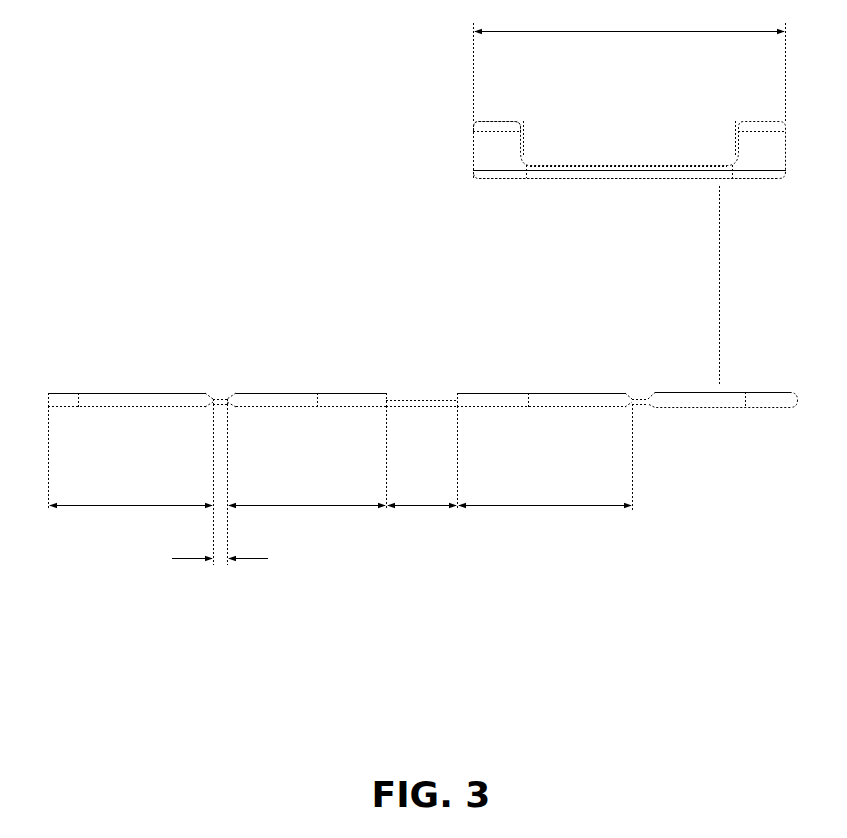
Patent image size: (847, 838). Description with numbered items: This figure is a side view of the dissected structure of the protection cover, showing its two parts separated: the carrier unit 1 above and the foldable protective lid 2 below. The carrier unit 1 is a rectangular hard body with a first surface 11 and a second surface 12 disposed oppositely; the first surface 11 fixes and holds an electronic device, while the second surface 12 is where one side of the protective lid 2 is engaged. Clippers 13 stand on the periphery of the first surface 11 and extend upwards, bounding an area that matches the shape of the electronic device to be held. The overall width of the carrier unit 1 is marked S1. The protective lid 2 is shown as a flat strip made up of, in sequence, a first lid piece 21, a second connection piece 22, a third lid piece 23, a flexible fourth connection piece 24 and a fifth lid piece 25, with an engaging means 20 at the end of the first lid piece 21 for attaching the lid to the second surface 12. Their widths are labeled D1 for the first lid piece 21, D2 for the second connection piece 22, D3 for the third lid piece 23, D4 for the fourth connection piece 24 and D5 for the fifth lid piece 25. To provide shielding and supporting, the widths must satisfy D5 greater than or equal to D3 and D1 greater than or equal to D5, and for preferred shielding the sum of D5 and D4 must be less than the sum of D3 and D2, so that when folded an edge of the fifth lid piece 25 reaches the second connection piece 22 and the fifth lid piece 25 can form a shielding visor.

The carrier unit 1 is at (665, 172).
The first surface 11 is at (627, 168).
The second surface 12 is at (560, 179).
The clippers 13 is at (495, 143).
The protective lid 2 is at (418, 380).
The engaging means 20 is at (718, 401).
The first lid piece 21 is at (570, 400).
The second connection piece 22 is at (423, 402).
The third lid piece 23 is at (282, 398).
The fourth connection piece 24 is at (220, 398).
The fifth lid piece 25 is at (133, 398).
The width of the carrier unit S1 is at (630, 64).
The width of the first lid piece D1 is at (546, 457).
The width of the second connection piece D2 is at (423, 458).
The width of the third lid piece D3 is at (307, 484).
The width of the fourth connection piece D4 is at (220, 577).
The width of the fifth lid piece D5 is at (131, 484).